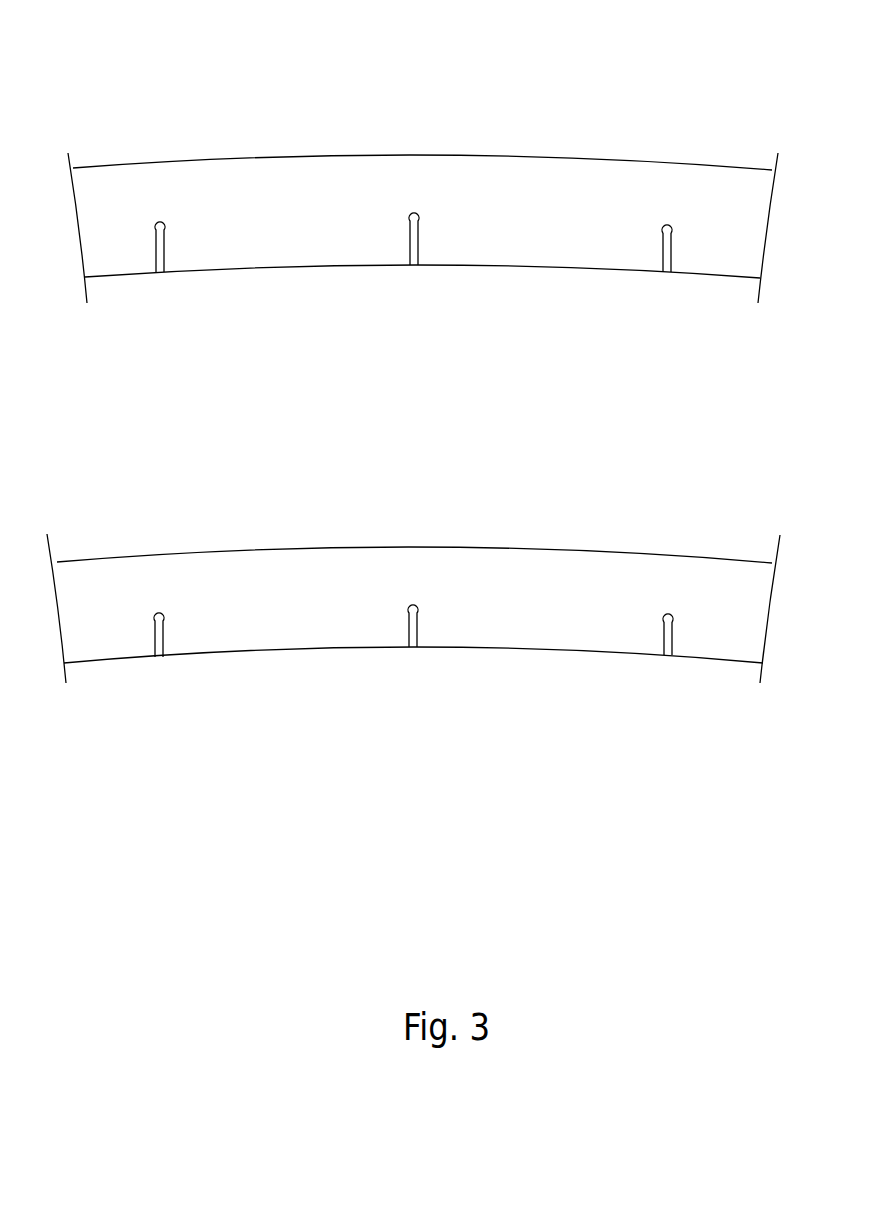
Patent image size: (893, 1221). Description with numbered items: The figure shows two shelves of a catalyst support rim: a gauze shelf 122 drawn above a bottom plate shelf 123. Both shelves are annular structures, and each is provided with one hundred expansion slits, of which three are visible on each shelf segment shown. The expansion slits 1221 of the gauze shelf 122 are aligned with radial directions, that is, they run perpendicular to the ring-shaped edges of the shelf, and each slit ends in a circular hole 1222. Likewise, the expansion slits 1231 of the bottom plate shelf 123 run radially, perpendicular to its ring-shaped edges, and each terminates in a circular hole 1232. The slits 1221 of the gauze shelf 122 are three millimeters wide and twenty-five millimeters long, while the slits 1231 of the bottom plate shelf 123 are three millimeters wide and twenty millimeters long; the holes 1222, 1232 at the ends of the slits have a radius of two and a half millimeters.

The gauze shelf 122 is at (129, 58).
The expansion slit 1221 is at (663, 247).
The circular hole 1222 is at (665, 224).
The bottom plate shelf 123 is at (109, 473).
The expansion slit 1231 is at (663, 650).
The circular hole 1232 is at (664, 615).